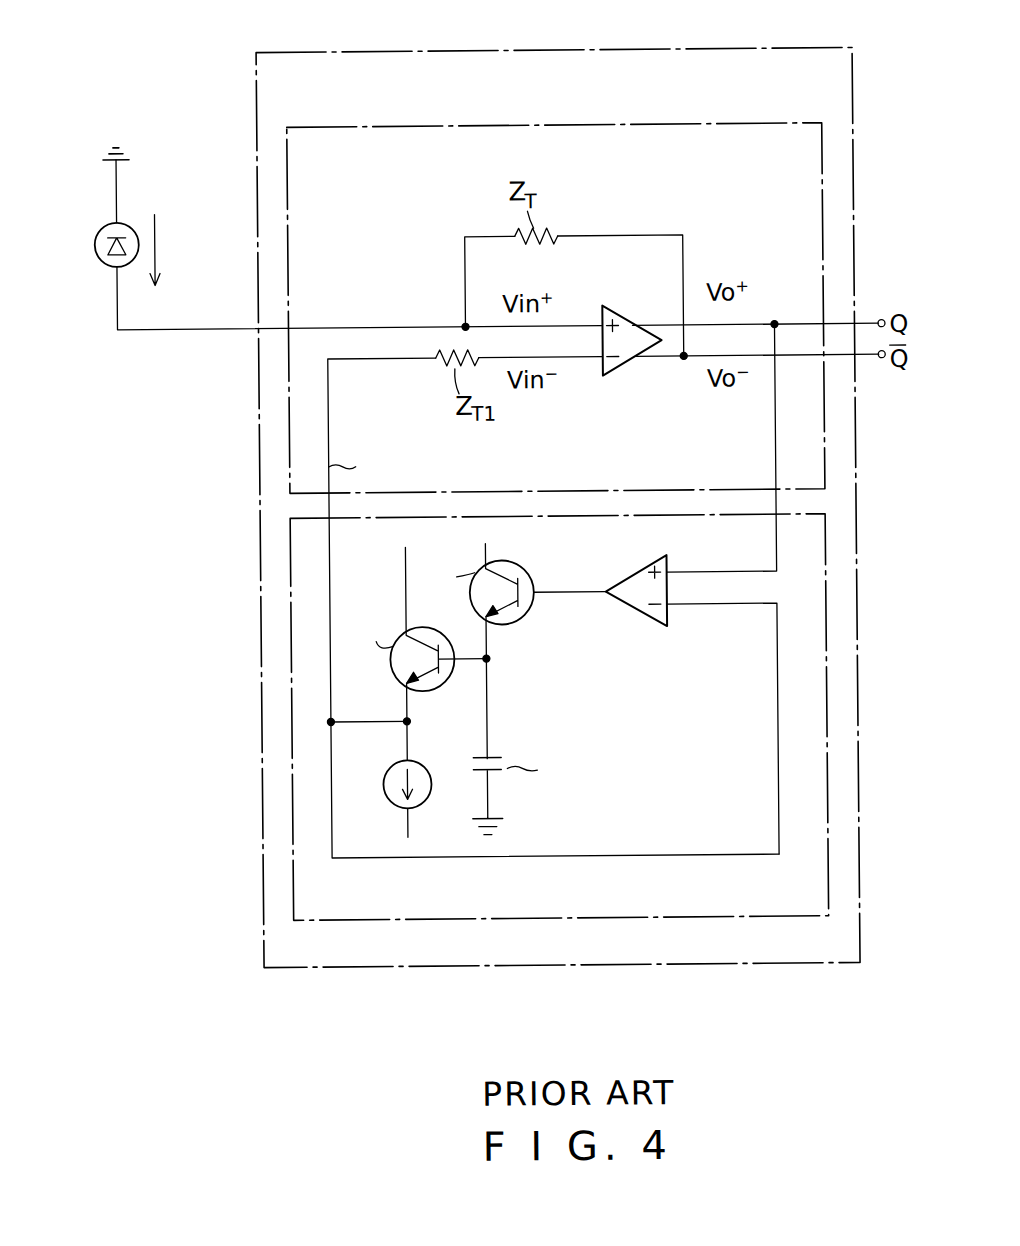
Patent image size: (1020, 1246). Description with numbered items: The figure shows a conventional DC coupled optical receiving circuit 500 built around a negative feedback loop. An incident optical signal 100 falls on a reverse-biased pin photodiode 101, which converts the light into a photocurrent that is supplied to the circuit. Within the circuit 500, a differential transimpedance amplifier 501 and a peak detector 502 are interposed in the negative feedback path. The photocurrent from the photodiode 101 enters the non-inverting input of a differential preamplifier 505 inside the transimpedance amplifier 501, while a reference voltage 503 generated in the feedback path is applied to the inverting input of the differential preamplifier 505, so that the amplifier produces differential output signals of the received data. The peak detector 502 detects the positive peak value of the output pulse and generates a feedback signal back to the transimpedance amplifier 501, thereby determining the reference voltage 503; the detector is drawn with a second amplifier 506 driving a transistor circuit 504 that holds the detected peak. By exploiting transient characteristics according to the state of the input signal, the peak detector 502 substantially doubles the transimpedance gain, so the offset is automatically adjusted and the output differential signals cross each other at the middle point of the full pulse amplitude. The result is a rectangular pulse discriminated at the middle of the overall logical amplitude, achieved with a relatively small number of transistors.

The incident optical signal 100 is at (322, 233).
The pin photodiode 101 is at (100, 262).
The optical receiver circuit 500 is at (463, 50).
The differential transimpedance amplifier 501 is at (498, 125).
The peak detector 502 is at (522, 918).
The reference voltage 503 is at (329, 413).
The current control circuit 504 is at (677, 856).
The differential preamplifier 505 is at (626, 308).
The amplifier A2 506 is at (633, 610).